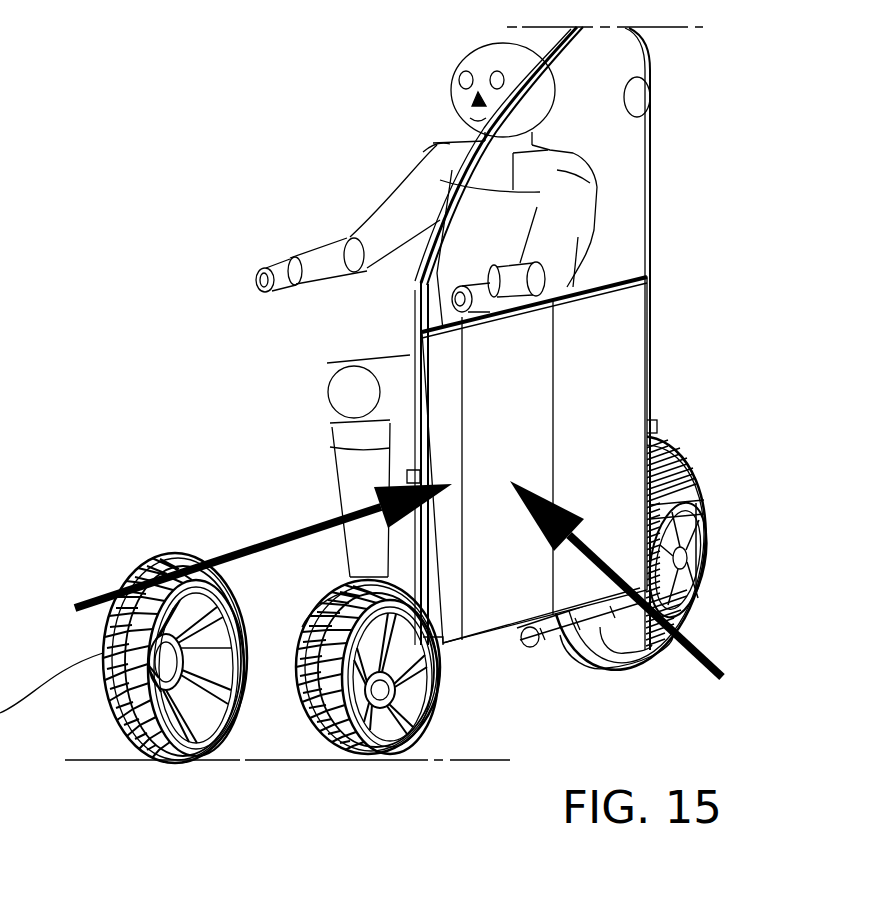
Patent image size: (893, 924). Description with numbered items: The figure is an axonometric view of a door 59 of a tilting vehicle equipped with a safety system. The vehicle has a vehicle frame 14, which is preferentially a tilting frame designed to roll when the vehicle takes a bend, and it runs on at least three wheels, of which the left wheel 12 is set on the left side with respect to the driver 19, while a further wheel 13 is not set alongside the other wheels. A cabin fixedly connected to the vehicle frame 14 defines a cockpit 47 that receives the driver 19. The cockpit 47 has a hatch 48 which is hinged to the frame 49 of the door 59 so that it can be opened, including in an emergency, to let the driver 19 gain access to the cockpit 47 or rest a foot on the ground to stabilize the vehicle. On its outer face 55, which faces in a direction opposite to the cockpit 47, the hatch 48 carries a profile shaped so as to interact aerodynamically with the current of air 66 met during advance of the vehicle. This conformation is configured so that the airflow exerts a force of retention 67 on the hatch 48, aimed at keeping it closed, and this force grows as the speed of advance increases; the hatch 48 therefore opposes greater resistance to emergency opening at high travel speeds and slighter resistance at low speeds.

The left wheel 12 is at (443, 692).
The further wheel 13 is at (693, 620).
The vehicle frame 14 is at (683, 457).
The driver 19 is at (417, 178).
The cockpit 47 is at (368, 327).
The hatch 48 is at (617, 307).
The frame of the door 49 is at (653, 110).
The outer face 55 is at (600, 363).
The door 59 is at (618, 192).
The current of air 66 is at (300, 518).
The force of retention 67 is at (590, 547).